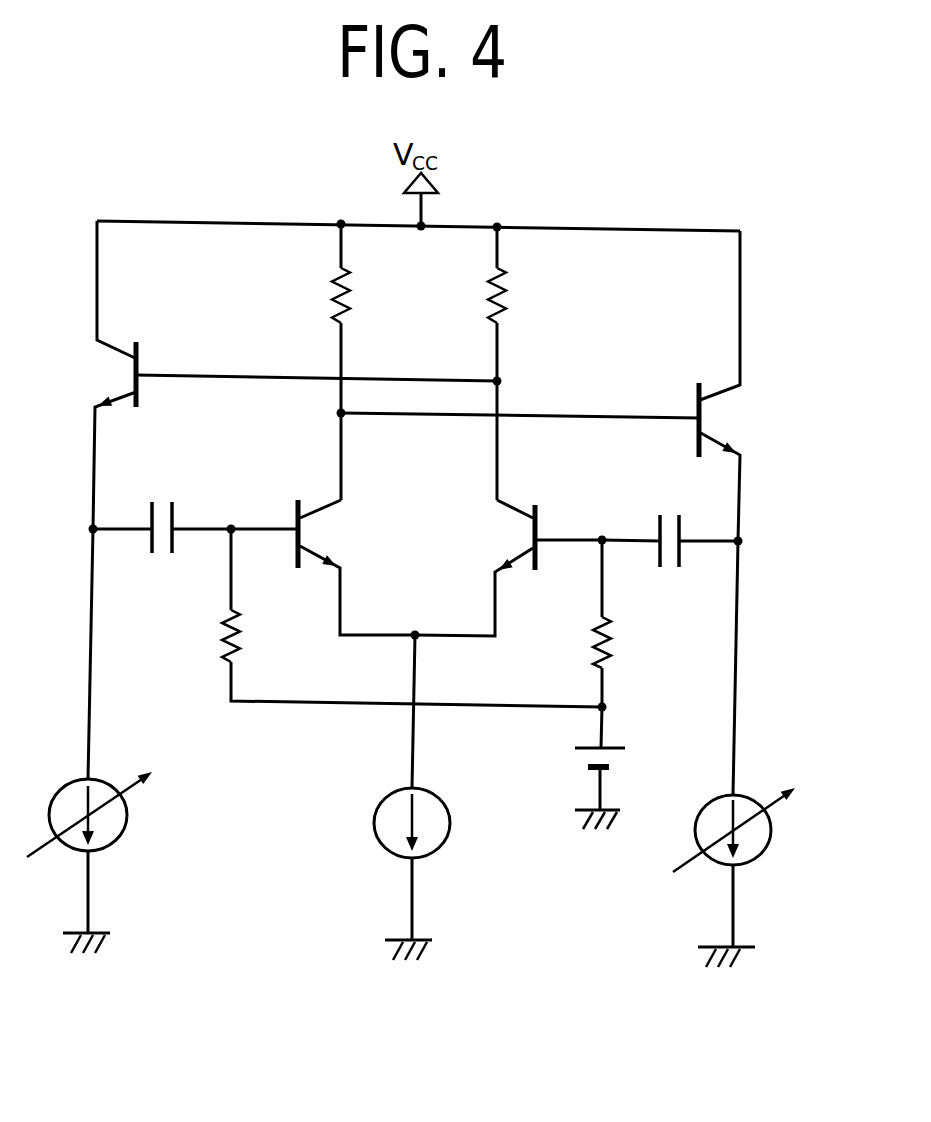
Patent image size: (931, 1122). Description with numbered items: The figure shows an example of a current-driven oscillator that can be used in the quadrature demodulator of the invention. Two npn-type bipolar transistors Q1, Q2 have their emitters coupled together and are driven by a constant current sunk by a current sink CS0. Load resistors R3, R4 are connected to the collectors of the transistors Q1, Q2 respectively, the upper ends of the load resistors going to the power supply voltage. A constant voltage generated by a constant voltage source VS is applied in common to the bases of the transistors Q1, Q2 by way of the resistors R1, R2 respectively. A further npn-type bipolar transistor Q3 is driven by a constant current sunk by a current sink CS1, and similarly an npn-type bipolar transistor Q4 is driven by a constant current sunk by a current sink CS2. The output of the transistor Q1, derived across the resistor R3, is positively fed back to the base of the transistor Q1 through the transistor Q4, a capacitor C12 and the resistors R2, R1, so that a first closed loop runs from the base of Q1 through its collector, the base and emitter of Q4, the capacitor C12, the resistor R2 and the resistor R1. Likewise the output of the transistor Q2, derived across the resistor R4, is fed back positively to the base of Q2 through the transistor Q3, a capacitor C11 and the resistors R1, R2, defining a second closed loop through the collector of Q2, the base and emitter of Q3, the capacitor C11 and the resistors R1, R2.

The npn-type bipolar transistor Q1 is at (323, 567).
The npn-type bipolar transistor Q2 is at (508, 568).
The npn-type bipolar transistor Q3 is at (277, 375).
The npn-type bipolar transistor Q4 is at (561, 386).
The resistor R1 is at (412, 618).
The resistor R2 is at (630, 623).
The load resistor R3 is at (370, 362).
The load resistor R4 is at (526, 363).
The capacitor C11 is at (162, 508).
The capacitor C12 is at (670, 521).
The current sink CS0 is at (450, 823).
The current sink CS1 is at (127, 815).
The current sink CS2 is at (771, 830).
The constant voltage source VS is at (620, 759).